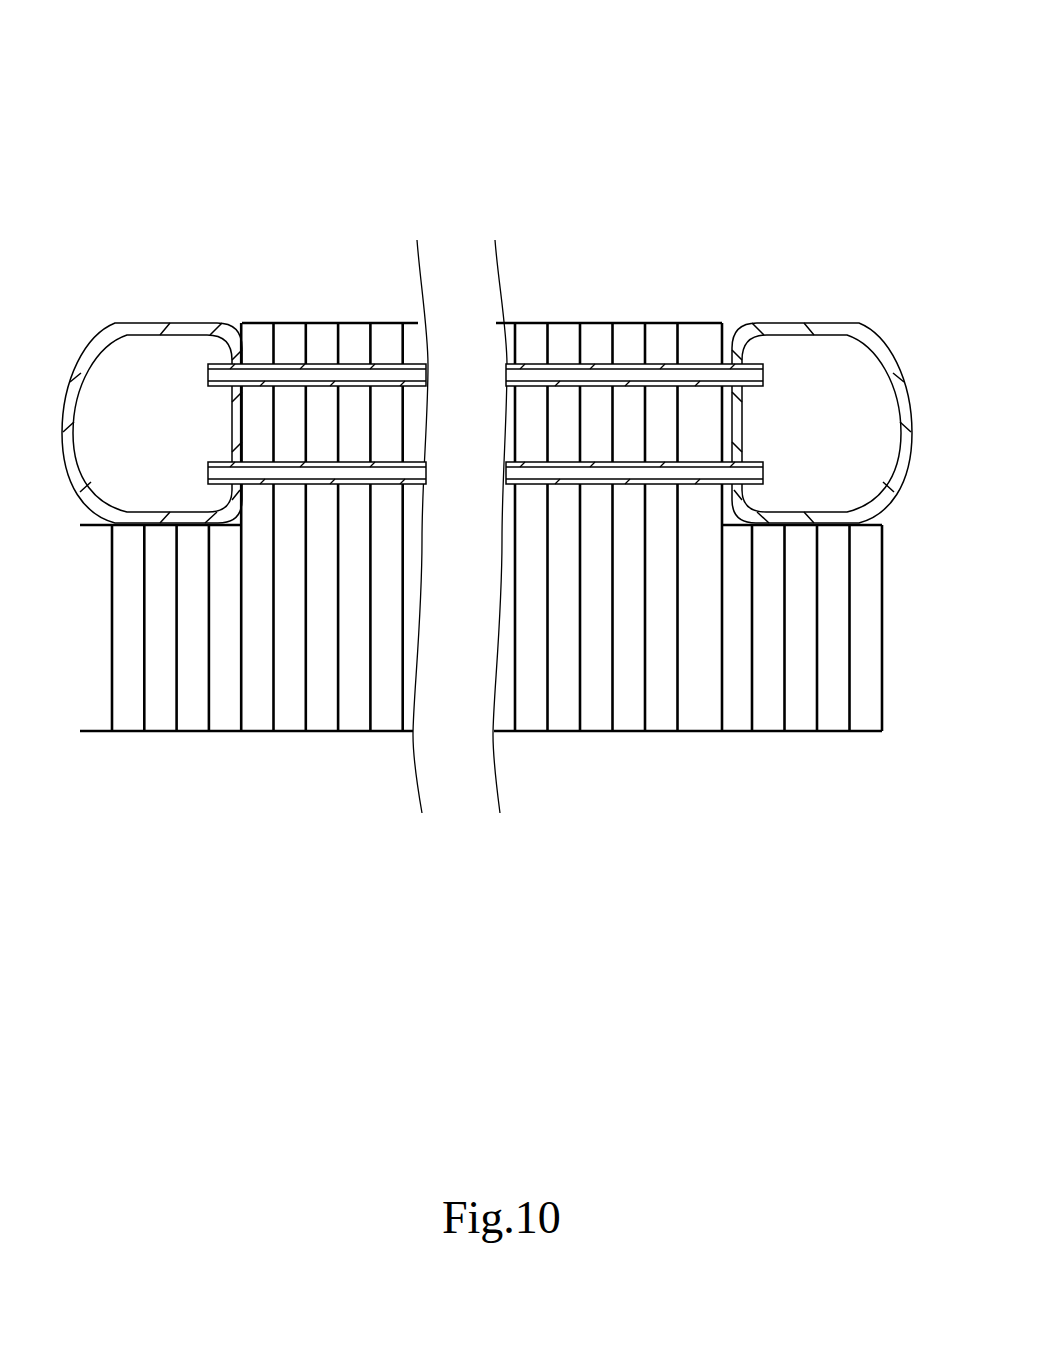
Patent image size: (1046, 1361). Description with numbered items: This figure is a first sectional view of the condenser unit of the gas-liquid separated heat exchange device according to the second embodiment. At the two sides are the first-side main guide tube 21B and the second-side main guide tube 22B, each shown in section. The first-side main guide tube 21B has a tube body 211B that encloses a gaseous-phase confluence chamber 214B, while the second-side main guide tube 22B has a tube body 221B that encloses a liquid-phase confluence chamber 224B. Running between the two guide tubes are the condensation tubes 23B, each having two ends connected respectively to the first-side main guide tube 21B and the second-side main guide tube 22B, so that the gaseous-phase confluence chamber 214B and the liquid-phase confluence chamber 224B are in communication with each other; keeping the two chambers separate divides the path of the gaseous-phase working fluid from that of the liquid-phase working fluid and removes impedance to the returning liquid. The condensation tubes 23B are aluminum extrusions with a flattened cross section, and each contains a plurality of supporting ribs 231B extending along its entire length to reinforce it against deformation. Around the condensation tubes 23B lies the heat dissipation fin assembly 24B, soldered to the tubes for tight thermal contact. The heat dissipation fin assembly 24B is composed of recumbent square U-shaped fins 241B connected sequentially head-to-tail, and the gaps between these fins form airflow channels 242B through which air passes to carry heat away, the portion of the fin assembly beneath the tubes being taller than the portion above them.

The first-side main guide tube 21B is at (811, 348).
The tube body 211B is at (817, 330).
The gaseous-phase confluence chamber 214B is at (817, 423).
The second-side main guide tube 22B is at (159, 265).
The tube body 221B is at (135, 328).
The liquid-phase confluence chamber 224B is at (180, 355).
The condensation tube 23B is at (485, 326).
The supporting rib 231B is at (217, 362).
The heat dissipation fin assembly 24B is at (489, 380).
The recumbent square U-shaped fin 241B is at (570, 323).
The airflow channel 242B is at (528, 345).